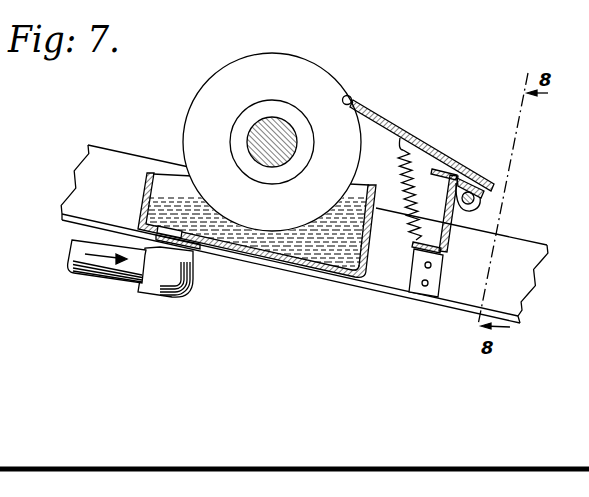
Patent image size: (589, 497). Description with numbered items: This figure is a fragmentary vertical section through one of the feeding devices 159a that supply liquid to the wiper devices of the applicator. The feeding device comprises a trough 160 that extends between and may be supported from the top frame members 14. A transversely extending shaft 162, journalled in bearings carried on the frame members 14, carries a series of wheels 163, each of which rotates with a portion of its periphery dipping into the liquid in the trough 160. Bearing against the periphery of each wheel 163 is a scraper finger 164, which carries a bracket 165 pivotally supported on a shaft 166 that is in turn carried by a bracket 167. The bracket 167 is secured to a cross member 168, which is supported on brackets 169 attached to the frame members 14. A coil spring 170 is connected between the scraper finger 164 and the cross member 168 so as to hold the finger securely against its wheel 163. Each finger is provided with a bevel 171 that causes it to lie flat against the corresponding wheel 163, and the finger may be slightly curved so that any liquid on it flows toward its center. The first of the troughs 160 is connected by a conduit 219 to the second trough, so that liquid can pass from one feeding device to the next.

The top members 14 is at (372, 283).
The feeding device 159a is at (184, 128).
The trough 160 is at (255, 250).
The shaft 162 is at (283, 132).
The wheel 163 is at (282, 60).
The scraper finger 164 is at (407, 134).
The bracket 165 is at (476, 196).
The shaft 166 is at (470, 208).
The bracket 167 is at (458, 214).
The cross member 168 is at (452, 172).
The bracket 169 is at (416, 272).
The coil spring 170 is at (403, 203).
The bevel 171 is at (350, 96).
The conduit 219 is at (110, 276).